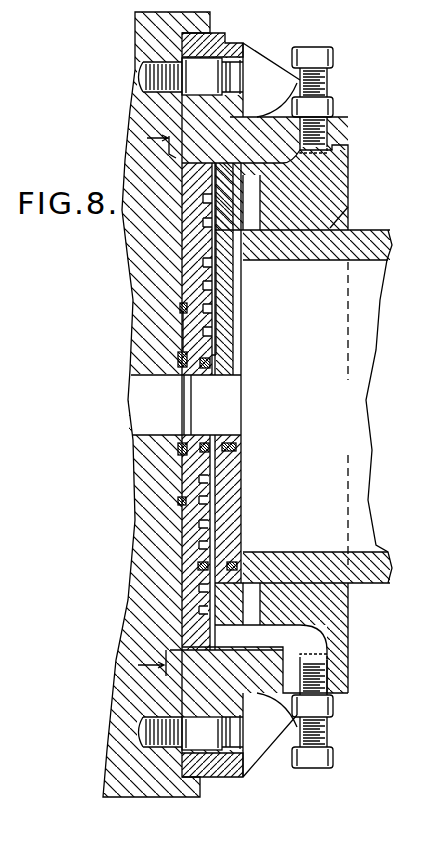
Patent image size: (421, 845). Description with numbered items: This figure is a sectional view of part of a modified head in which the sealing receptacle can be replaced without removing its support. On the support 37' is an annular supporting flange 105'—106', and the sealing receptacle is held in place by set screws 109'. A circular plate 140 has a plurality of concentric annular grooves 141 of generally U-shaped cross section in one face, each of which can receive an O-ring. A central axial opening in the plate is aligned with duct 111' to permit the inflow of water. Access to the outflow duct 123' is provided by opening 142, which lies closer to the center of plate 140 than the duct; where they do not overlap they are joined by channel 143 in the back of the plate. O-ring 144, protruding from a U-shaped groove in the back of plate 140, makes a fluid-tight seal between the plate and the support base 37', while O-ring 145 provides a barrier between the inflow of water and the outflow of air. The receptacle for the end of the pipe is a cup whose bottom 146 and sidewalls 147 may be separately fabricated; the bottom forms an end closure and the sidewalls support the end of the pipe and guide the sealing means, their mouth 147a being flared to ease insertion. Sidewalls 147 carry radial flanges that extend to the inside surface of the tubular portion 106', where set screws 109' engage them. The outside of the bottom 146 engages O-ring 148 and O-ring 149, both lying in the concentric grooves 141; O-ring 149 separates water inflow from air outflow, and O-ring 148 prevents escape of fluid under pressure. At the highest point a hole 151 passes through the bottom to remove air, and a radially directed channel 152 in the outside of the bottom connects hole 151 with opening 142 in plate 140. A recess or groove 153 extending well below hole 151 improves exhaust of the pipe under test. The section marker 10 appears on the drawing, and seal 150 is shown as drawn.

The support 37' is at (149, 404).
The annular supporting flange 105' is at (207, 377).
The tubular portion of support flange 106' is at (286, 405).
The set screws 109' is at (336, 397).
The section line indicator 10 is at (148, 404).
The concentric annular grooves 141 is at (207, 222).
The circular plate 140 is at (175, 259).
The radially directed channel 152 is at (214, 285).
The outflow duct 123' is at (130, 314).
The channel 143 is at (183, 338).
The opening 142 is at (183, 365).
The hole 151 is at (238, 262).
The recess or groove 153 is at (238, 323).
The sidewalls 147 is at (318, 190).
The mouth 147a is at (333, 214).
The duct 111' is at (155, 406).
The O-ring 145 is at (182, 448).
The O-ring 144 is at (180, 499).
The O-ring 149 is at (222, 447).
The bottom 146 is at (233, 498).
The seal ring 150 is at (243, 569).
The O-ring 148 is at (200, 567).